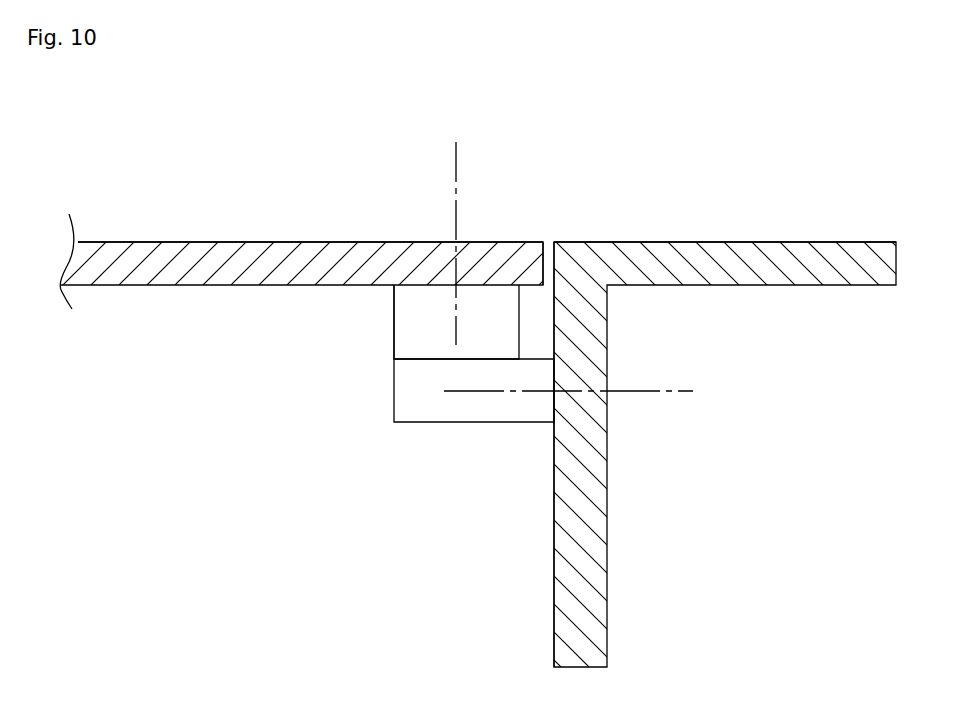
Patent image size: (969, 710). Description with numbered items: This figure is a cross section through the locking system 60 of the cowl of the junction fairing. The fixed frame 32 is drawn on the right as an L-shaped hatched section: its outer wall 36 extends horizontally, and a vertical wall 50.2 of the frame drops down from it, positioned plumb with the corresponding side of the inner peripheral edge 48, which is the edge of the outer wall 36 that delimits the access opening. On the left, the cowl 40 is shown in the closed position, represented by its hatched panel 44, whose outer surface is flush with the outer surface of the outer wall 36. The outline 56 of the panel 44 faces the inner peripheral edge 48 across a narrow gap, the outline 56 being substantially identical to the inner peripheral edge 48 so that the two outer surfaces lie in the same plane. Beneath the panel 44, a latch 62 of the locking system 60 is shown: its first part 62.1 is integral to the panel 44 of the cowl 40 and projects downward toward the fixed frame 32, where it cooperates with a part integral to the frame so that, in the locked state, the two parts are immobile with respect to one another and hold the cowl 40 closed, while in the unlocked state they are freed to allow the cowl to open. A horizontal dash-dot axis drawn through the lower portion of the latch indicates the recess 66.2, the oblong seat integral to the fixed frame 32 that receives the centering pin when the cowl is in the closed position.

The fixed frame 32 is at (552, 392).
The outer wall 36 is at (782, 242).
The cowl 40 is at (145, 252).
The panel 44 is at (243, 263).
The inner peripheral edge 48 is at (556, 240).
The left wall 50.2 is at (554, 598).
The outline 56 is at (542, 240).
The locking system 60 is at (376, 316).
The latch 62 is at (395, 353).
The first part 62.1 is at (418, 304).
The recess 66.2 is at (478, 372).